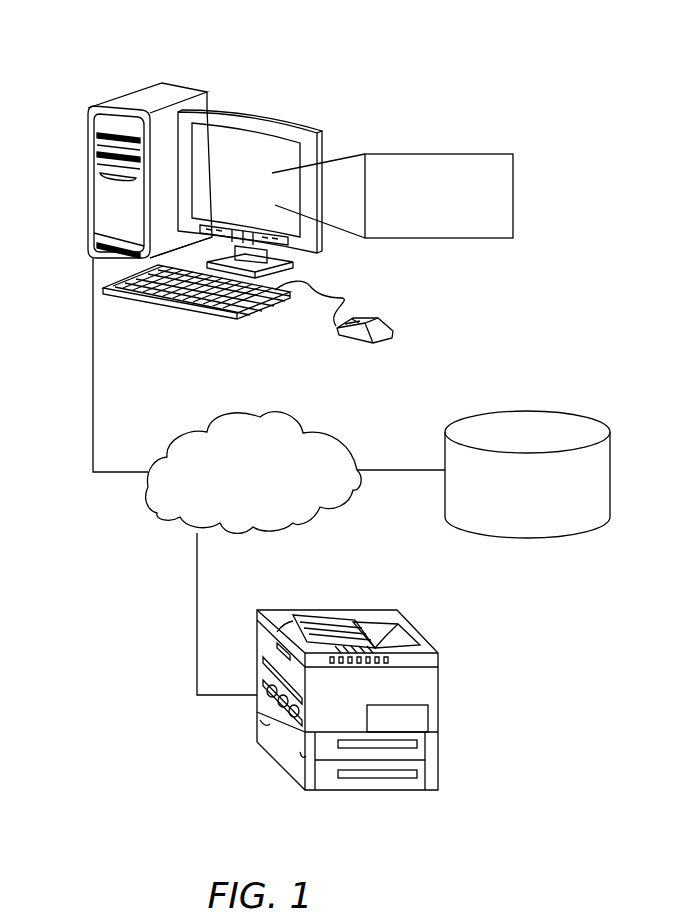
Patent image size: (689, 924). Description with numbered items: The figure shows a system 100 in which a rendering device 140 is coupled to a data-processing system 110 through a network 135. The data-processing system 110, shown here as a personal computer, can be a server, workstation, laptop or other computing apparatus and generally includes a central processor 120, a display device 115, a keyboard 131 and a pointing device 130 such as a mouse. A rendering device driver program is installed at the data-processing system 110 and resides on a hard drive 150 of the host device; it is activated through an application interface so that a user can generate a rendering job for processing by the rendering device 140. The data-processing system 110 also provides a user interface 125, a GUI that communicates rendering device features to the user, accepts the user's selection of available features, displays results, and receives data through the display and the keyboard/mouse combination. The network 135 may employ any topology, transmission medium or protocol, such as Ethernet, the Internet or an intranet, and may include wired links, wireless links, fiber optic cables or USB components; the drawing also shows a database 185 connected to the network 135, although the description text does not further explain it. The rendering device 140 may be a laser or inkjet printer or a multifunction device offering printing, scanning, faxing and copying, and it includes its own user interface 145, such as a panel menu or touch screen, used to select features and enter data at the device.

The system 100 is at (398, 62).
The data-processing system 110 is at (248, 114).
The display device 115 is at (268, 147).
The central processor 120 is at (89, 244).
The user interface 125 is at (465, 154).
The pointing device 130 is at (373, 319).
The keyboard 131 is at (168, 295).
The network 135 is at (283, 418).
The rendering device 140 is at (344, 612).
The user interface 145 is at (375, 648).
The hard drive 150 is at (118, 93).
The database 185 is at (562, 420).